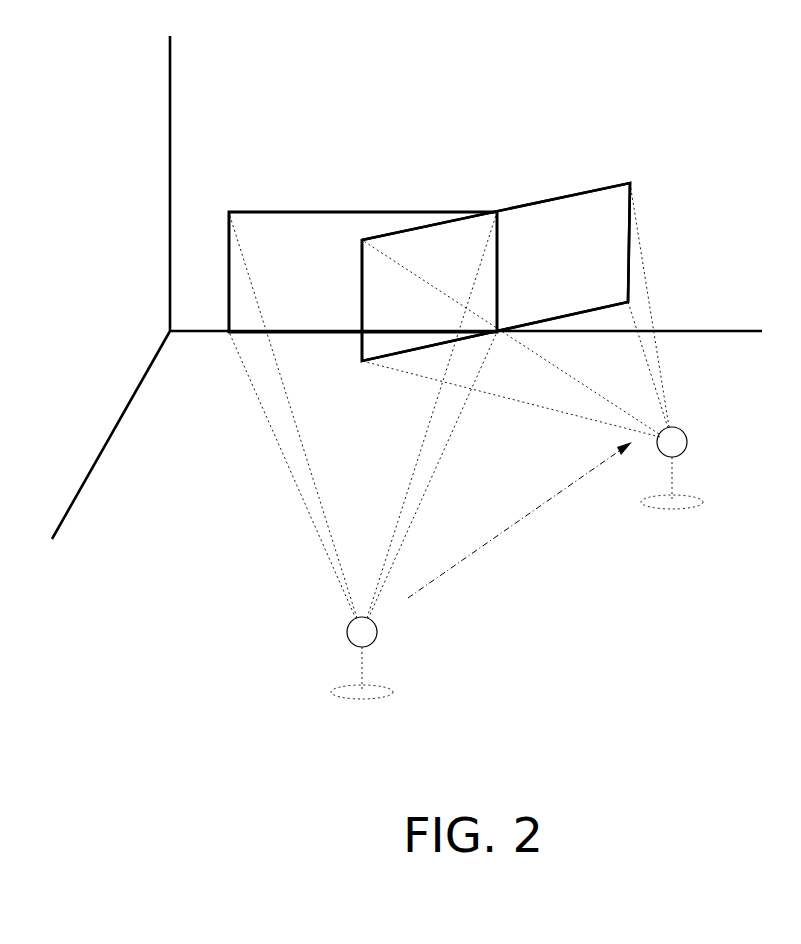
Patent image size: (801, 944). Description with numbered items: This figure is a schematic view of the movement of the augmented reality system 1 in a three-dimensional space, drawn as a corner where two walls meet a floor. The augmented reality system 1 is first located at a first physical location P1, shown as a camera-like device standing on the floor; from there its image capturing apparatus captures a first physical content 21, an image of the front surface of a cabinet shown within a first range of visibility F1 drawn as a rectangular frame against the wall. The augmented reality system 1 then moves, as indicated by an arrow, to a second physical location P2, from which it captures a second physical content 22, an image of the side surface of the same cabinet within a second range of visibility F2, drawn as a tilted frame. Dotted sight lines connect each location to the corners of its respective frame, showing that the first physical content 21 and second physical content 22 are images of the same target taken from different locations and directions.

The augmented reality system 1 is at (521, 594).
The first physical content 21 is at (318, 282).
The second physical content 22 is at (553, 284).
The first range of visibility F1 is at (265, 212).
The second range of visibility F2 is at (565, 195).
The first physical location P1 is at (364, 689).
The second physical location P2 is at (674, 500).